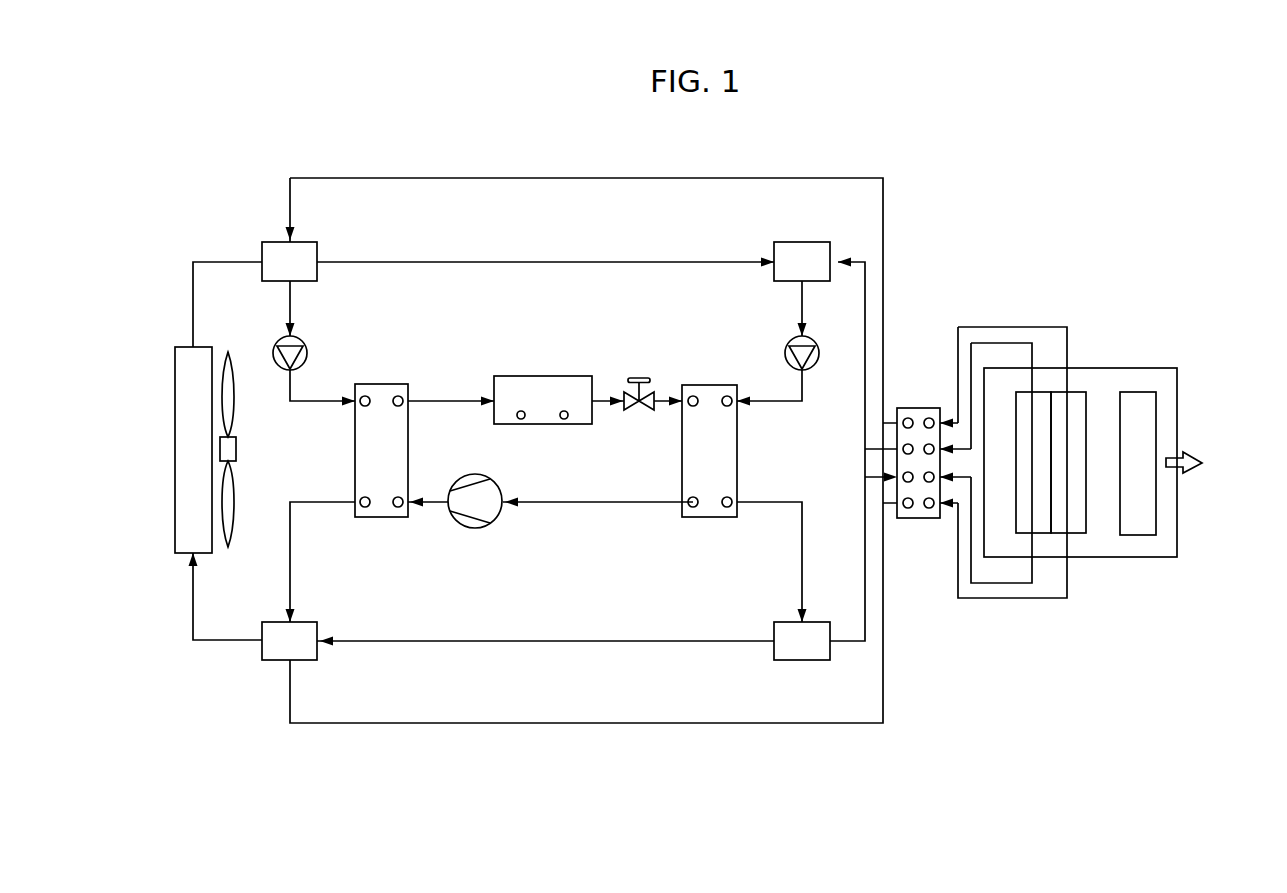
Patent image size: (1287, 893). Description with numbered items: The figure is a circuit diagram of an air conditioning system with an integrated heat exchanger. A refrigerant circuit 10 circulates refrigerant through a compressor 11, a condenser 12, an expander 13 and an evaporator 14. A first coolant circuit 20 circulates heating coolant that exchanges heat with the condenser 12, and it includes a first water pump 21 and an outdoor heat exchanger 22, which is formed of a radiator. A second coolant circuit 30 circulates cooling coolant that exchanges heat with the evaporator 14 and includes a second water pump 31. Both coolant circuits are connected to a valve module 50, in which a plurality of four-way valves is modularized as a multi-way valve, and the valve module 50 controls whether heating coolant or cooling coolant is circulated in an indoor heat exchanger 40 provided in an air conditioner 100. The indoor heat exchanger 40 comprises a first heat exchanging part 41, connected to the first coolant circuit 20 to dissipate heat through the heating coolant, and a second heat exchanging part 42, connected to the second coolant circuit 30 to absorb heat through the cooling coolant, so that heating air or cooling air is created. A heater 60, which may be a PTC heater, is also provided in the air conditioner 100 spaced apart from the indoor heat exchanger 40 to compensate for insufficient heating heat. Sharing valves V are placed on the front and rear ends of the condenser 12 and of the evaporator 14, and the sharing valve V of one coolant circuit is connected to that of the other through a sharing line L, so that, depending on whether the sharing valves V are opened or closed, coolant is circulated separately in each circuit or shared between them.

The refrigerant circuit 10 is at (588, 503).
The compressor 11 is at (469, 528).
The condenser 12 is at (385, 384).
The expander 13 is at (636, 376).
The evaporator 14 is at (708, 385).
The first coolant circuit 20 is at (221, 642).
The first water pump 21 is at (300, 341).
The outdoor heat exchanger 22 is at (180, 346).
The second coolant circuit 30 is at (865, 310).
The second water pump 31 is at (808, 367).
The indoor heat exchanger 40 is at (1044, 510).
The first heat exchanging part 41 is at (1039, 527).
The second heat exchanging part 42 is at (1078, 525).
The valve module 50 is at (917, 532).
The heater 60 is at (1147, 500).
The air conditioner 100 is at (1105, 362).
The sharing valve V is at (270, 242).
The sharing line L is at (540, 262).